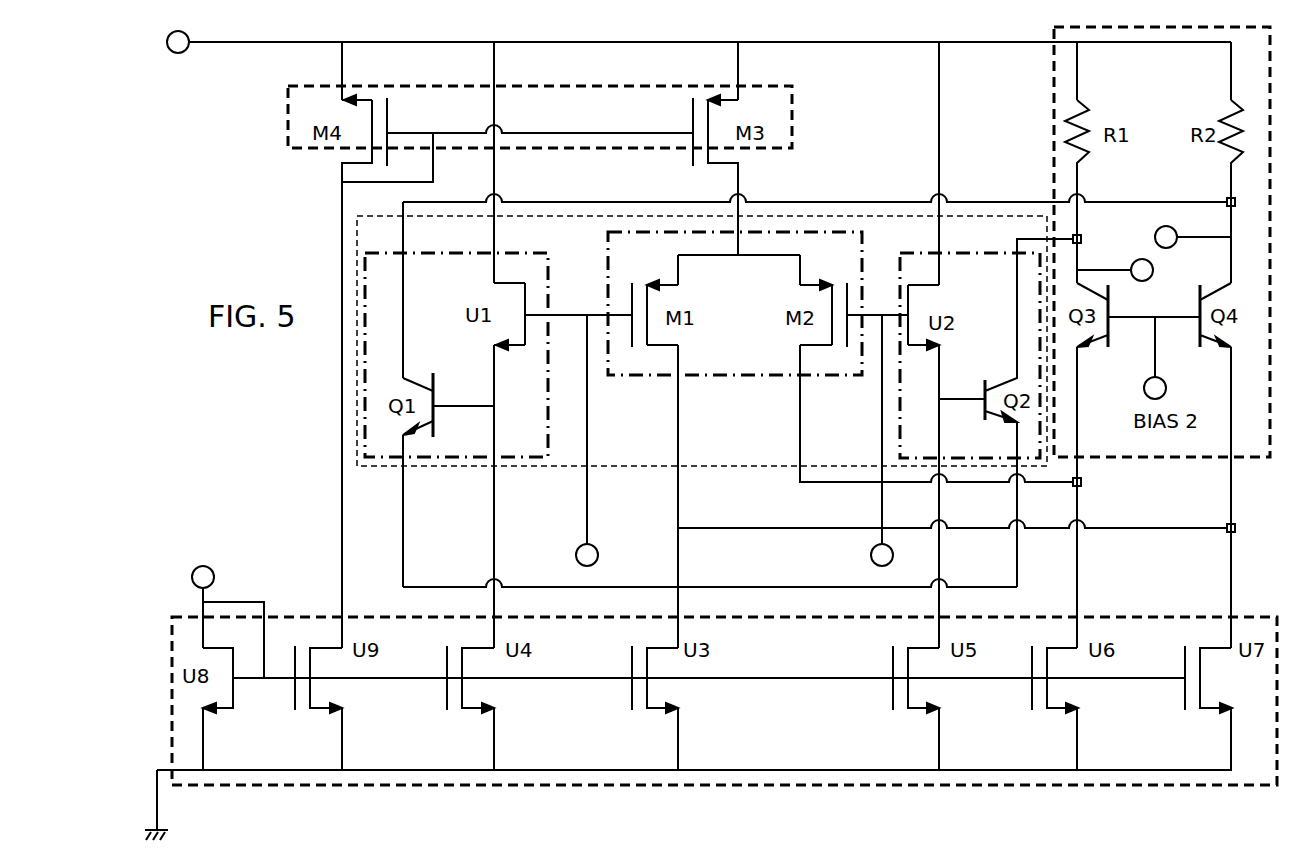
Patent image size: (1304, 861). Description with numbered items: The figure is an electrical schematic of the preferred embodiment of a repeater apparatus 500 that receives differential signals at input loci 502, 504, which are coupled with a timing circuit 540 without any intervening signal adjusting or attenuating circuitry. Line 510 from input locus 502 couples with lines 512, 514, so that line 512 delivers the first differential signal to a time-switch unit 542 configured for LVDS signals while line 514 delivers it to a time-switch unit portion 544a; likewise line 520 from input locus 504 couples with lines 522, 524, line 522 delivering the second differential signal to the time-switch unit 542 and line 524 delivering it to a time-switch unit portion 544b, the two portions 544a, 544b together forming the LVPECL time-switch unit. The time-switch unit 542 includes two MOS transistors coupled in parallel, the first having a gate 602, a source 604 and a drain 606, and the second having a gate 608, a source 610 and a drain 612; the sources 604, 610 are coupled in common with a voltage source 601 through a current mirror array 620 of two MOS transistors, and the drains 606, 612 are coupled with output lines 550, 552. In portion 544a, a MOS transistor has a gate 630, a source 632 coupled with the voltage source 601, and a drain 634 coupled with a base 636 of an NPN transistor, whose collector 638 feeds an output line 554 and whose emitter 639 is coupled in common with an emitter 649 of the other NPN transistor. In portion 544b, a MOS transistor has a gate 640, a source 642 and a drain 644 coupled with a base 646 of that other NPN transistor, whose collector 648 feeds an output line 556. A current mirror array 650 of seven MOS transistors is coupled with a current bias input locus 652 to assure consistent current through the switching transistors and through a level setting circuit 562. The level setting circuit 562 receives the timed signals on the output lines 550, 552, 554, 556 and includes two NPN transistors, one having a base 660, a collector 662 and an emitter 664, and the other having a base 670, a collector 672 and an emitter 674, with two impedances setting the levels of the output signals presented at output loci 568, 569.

The repeater apparatus 500 is at (279, 417).
The input locus 502 is at (599, 547).
The input locus 504 is at (871, 549).
The line 510 is at (590, 434).
The line 512 is at (597, 315).
The line 514 is at (563, 305).
The line 520 is at (878, 512).
The line 522 is at (863, 318).
The line 524 is at (893, 315).
The timing circuit 540 is at (702, 470).
The time-switch unit 542 is at (697, 380).
The time-switch unit portion 544a is at (456, 241).
The time-switch unit portion 544b is at (950, 254).
The output line 550 is at (1185, 530).
The output line 552 is at (1066, 486).
The output line 554 is at (1212, 198).
The output line 556 is at (1046, 236).
The level setting circuit 562 is at (1054, 27).
The output locus 568 is at (1175, 226).
The output locus 569 is at (1134, 262).
The voltage source 601 is at (190, 32).
The gate 602 is at (628, 312).
The source 604 is at (672, 292).
The drain 606 is at (679, 347).
The gate 608 is at (852, 288).
The source 610 is at (802, 290).
The drain 612 is at (807, 346).
The current mirror array 620 is at (793, 86).
The gate 630 is at (526, 318).
The source 632 is at (503, 288).
The drain 634 is at (507, 344).
The base 636 is at (436, 384).
The collector 638 is at (412, 376).
The emitter 639 is at (421, 428).
The gate 640 is at (908, 310).
The source 642 is at (935, 288).
The drain 644 is at (934, 345).
The base 646 is at (986, 404).
The collector 648 is at (1000, 385).
The emitter 649 is at (1007, 422).
The current mirror array 650 is at (390, 786).
The current bias input locus 652 is at (216, 570).
The base 660 is at (1115, 323).
The collector 662 is at (1096, 292).
The emitter 664 is at (1082, 350).
The base 670 is at (1197, 322).
The collector 672 is at (1212, 290).
The emitter 674 is at (1223, 347).